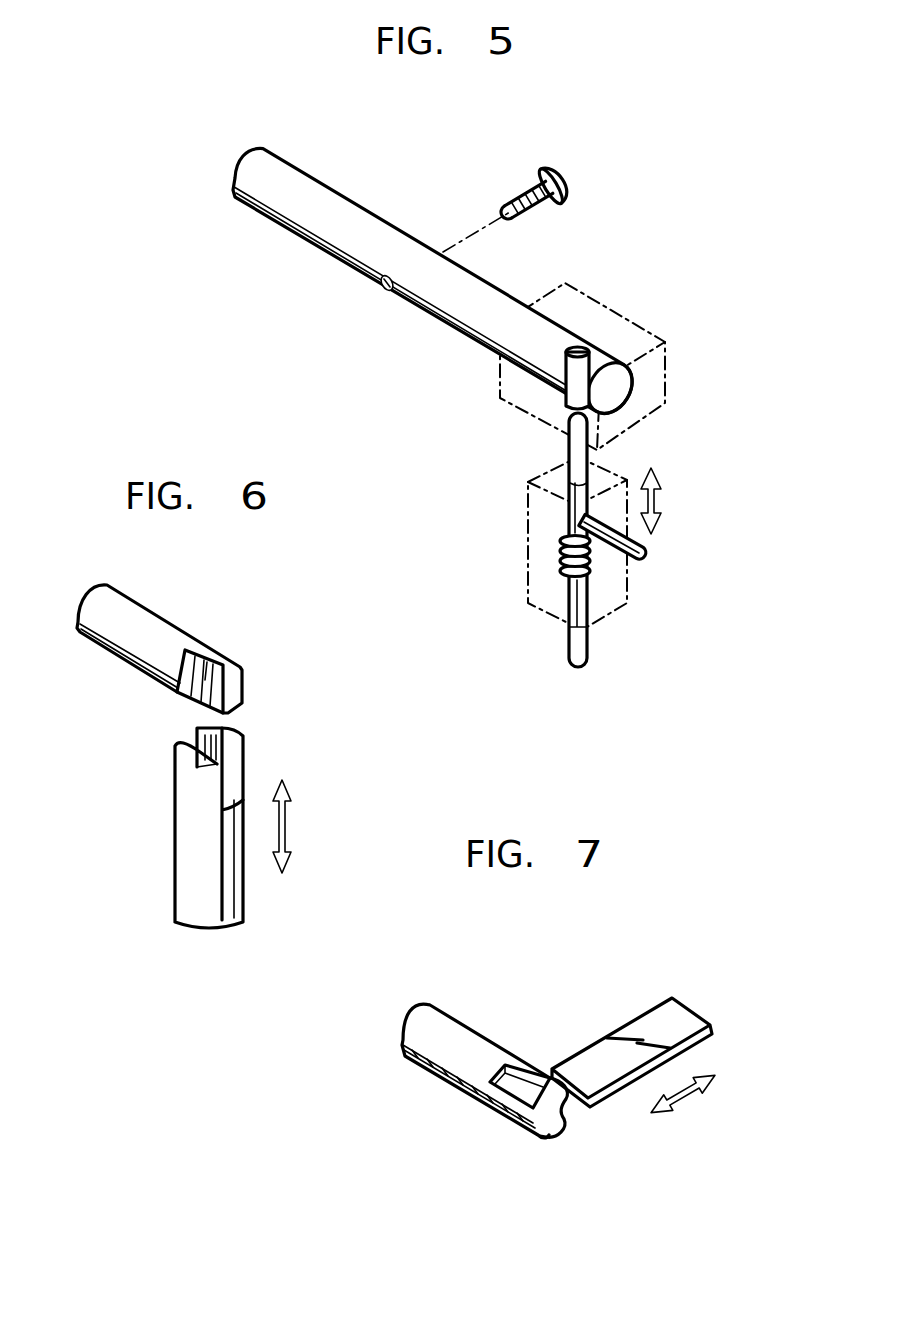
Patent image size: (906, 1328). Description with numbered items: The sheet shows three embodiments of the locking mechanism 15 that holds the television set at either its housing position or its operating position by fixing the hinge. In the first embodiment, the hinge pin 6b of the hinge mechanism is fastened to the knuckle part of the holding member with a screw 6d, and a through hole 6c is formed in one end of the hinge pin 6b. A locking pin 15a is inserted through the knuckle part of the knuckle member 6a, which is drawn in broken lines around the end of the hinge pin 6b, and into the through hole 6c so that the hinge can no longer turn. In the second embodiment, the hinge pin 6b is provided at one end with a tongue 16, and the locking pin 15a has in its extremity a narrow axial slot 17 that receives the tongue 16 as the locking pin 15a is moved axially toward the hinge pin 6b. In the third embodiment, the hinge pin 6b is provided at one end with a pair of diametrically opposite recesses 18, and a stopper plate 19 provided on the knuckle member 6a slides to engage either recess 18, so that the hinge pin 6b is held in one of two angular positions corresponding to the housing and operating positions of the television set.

In FIG. 5, the knuckle member 6a is at (668, 367).
In FIG. 5, the hinge pin 6b is at (341, 210).
In FIG. 6, the hinge pin 6b is at (213, 626).
In FIG. 7, the hinge pin 6b is at (468, 1042).
In FIG. 5, the through hole 6c is at (578, 348).
In FIG. 5, the screw 6d is at (520, 172).
In FIG. 5, the locking mechanism 15 is at (522, 530).
In FIG. 5, the locking pin 15a is at (568, 448).
In FIG. 6, the locking pin 15a is at (185, 880).
In FIG. 6, the tongue 16 is at (243, 690).
In FIG. 6, the axial slot 17 is at (181, 735).
In FIG. 7, the recesses 18 is at (503, 1096).
In FIG. 7, the stopper plate 19 is at (603, 1052).